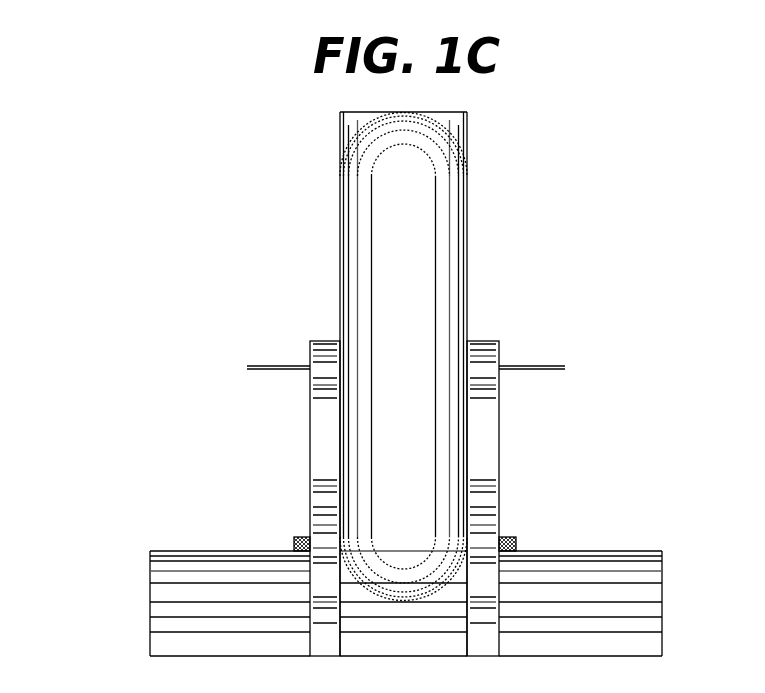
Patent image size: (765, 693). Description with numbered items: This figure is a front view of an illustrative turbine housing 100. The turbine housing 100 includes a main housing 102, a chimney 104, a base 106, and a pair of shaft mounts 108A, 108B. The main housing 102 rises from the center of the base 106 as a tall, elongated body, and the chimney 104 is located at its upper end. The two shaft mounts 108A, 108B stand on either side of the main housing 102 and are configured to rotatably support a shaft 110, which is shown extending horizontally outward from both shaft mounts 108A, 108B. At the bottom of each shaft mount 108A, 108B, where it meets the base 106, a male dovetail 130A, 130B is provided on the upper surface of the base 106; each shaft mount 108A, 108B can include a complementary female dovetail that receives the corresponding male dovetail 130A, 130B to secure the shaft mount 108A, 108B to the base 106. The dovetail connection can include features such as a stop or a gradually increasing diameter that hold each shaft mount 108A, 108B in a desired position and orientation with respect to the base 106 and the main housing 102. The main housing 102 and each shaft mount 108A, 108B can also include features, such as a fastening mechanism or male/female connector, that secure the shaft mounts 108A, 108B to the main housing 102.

The turbine housing 100 is at (126, 156).
The main housing 102 is at (340, 265).
The chimney 104 is at (462, 128).
The base 106 is at (150, 590).
The shaft mount 108A is at (497, 443).
The shaft mount 108B is at (310, 443).
The shaft 110 is at (543, 362).
The male dovetail 130A is at (292, 541).
The male dovetail 130B is at (518, 541).